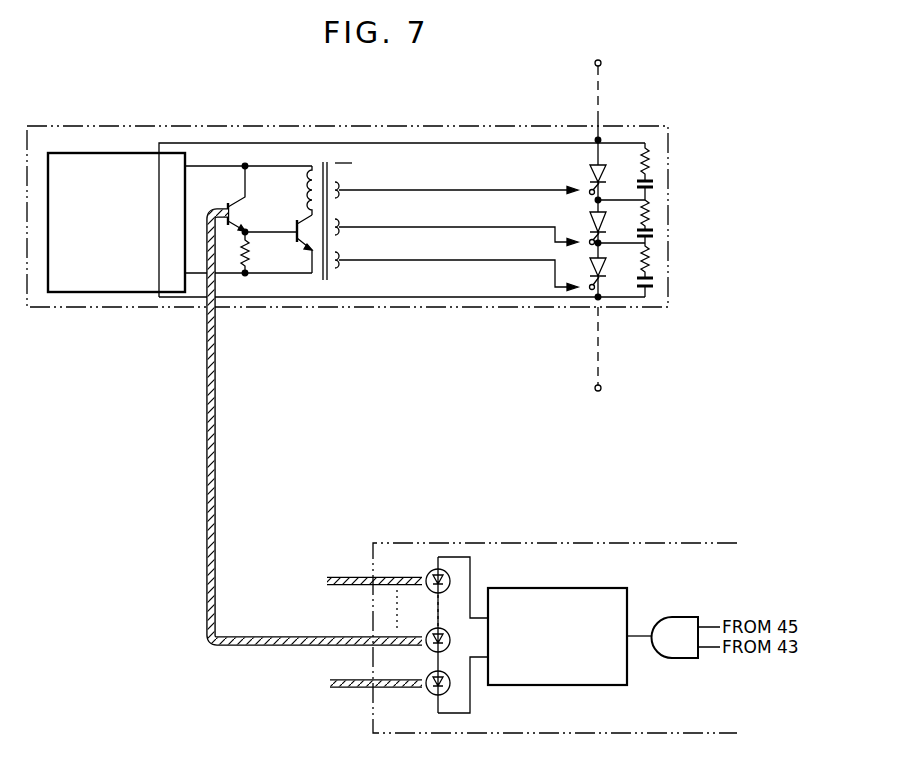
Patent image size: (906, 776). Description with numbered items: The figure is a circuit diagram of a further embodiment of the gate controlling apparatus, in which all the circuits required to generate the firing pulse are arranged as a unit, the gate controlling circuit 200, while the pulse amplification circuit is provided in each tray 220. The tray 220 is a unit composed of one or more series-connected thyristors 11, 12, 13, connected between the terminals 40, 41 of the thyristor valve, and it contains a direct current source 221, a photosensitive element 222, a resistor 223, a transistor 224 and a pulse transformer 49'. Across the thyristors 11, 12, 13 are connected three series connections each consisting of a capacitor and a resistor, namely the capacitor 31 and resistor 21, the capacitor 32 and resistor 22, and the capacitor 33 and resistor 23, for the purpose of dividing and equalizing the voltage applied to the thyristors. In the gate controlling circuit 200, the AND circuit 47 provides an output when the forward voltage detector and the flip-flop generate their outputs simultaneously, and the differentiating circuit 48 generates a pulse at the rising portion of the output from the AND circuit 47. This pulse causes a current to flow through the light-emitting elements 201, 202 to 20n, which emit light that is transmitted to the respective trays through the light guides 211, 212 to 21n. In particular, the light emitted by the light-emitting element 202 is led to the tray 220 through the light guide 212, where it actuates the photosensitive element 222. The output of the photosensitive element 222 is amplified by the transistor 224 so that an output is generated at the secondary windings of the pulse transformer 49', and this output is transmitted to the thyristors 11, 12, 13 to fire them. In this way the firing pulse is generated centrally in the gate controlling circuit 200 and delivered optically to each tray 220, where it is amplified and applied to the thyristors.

The tray 220 is at (508, 126).
The direct current source 221 is at (90, 293).
The photosensitive element 222 is at (234, 216).
The resistor 223 is at (242, 259).
The transistor 224 is at (292, 234).
The pulse transformer 49' is at (346, 213).
The thyristor 13 is at (588, 173).
The thyristor 12 is at (588, 235).
The thyristor 11 is at (589, 281).
The resistor 23 is at (656, 160).
The capacitor 33 is at (656, 184).
The resistor 22 is at (656, 213).
The capacitor 32 is at (656, 240).
The resistor 21 is at (656, 266).
The capacitor 31 is at (656, 292).
The terminal 40 is at (600, 60).
The terminal 41 is at (598, 391).
The light guide 212 is at (216, 392).
The light guide 21n is at (349, 577).
The light guide 211 is at (356, 689).
The light-emitting element 20n is at (448, 570).
The light-emitting element 202 is at (432, 652).
The light-emitting element 201 is at (430, 695).
The gate controlling circuit 200 is at (527, 543).
The differentiating circuit 48 is at (561, 588).
The AND circuit 47 is at (695, 617).